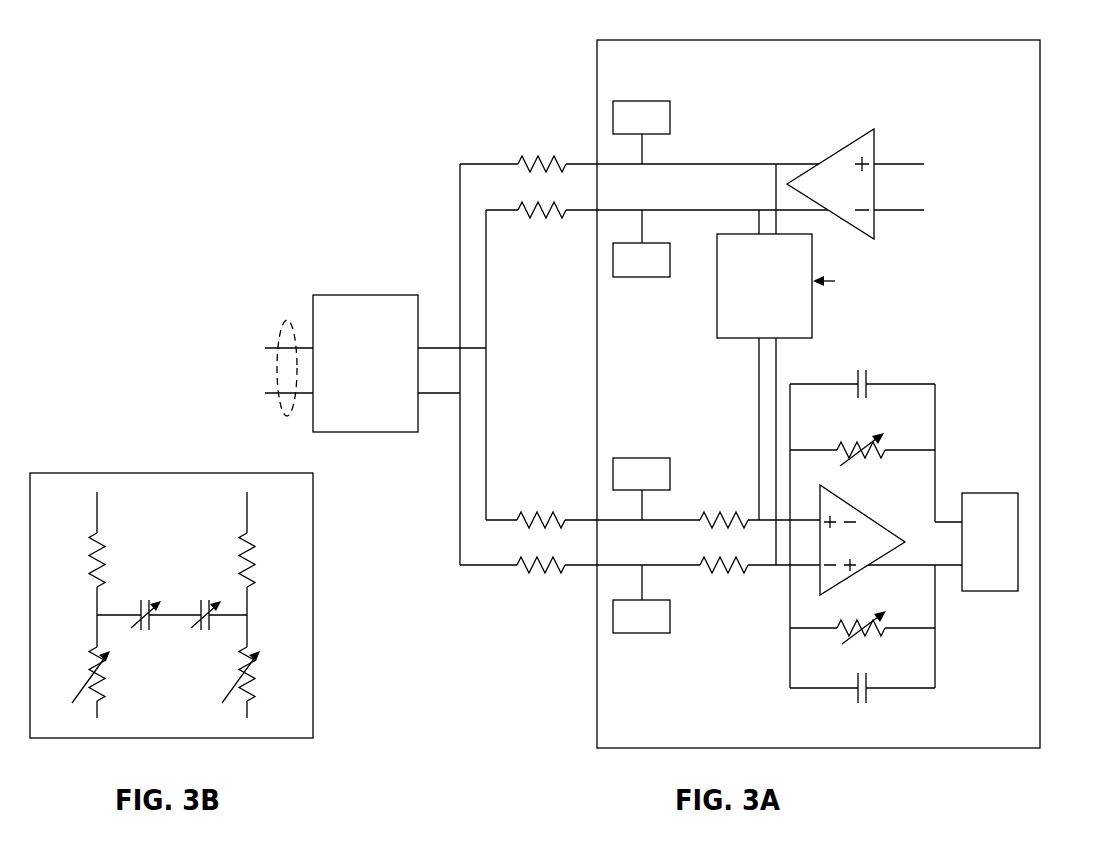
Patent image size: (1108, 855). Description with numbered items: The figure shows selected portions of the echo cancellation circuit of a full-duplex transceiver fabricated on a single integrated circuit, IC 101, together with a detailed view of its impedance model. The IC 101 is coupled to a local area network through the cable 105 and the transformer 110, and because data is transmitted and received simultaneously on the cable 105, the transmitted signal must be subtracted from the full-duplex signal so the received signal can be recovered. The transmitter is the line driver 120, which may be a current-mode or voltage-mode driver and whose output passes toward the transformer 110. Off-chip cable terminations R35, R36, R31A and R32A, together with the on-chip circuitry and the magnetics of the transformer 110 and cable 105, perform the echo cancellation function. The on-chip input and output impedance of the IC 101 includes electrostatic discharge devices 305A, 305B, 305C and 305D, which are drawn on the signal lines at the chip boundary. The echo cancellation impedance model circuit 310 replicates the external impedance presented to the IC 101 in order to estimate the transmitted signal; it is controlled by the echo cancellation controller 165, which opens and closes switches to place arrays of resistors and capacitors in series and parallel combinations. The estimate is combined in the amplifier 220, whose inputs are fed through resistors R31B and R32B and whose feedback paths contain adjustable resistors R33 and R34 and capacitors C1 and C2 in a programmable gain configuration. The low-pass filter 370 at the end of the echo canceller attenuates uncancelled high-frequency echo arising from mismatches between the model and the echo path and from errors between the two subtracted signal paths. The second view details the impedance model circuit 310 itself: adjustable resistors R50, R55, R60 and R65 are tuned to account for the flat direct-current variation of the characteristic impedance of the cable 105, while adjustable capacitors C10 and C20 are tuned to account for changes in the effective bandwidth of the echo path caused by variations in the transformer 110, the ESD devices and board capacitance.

In FIG. 3A, the IC 101 is at (1040, 136).
In FIG. 3A, the cable 105 is at (287, 320).
In FIG. 3A, the transformer 110 is at (372, 295).
In FIG. 3A, the line driver 120 is at (877, 186).
In FIG. 3A, the echo cancellation controller 165 is at (891, 284).
In FIG. 3A, the amplifier 220 is at (906, 542).
In FIG. 3A, the electrostatic discharge device 305A is at (648, 101).
In FIG. 3A, the electrostatic discharge device 305B is at (648, 277).
In FIG. 3A, the electrostatic discharge device 305C is at (648, 458).
In FIG. 3A, the electrostatic discharge device 305D is at (648, 633).
In FIG. 3A, the echo cancellation impedance model circuit 310 is at (735, 338).
In FIG. 3B, the echo cancellation impedance model circuit 310 is at (313, 624).
In FIG. 3A, the low-pass filter 370 is at (993, 493).
In FIG. 3A, the off-chip cable termination resistor R35 is at (639, 152).
In FIG. 3A, the off-chip cable termination resistor R36 is at (657, 224).
In FIG. 3A, the off-chip cable termination resistor R31A is at (593, 509).
In FIG. 3A, the resistor R31B is at (759, 509).
In FIG. 3A, the off-chip cable termination resistor R32A is at (580, 580).
In FIG. 3A, the resistor R32B is at (759, 580).
In FIG. 3A, the adjustable resistor R33 is at (862, 441).
In FIG. 3A, the adjustable resistor R34 is at (862, 638).
In FIG. 3A, the capacitor C1 is at (862, 372).
In FIG. 3A, the capacitor C2 is at (862, 702).
In FIG. 3B, the adjustable resistor R50 is at (76, 560).
In FIG. 3B, the adjustable resistor R55 is at (266, 560).
In FIG. 3B, the adjustable resistor R60 is at (79, 675).
In FIG. 3B, the adjustable resistor R65 is at (257, 675).
In FIG. 3B, the adjustable capacitor C10 is at (144, 603).
In FIG. 3B, the adjustable capacitor C20 is at (204, 603).